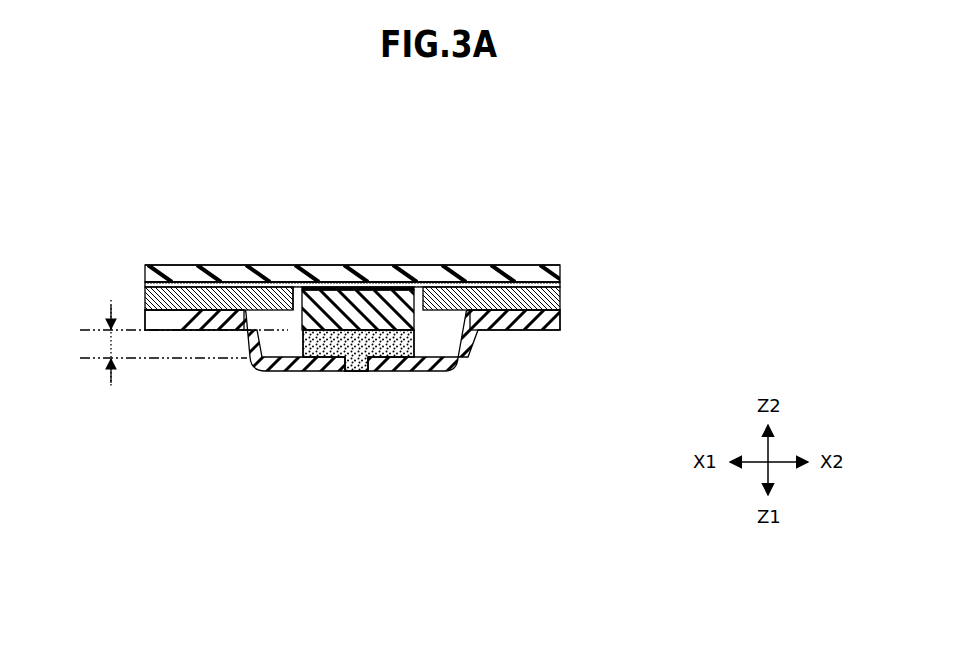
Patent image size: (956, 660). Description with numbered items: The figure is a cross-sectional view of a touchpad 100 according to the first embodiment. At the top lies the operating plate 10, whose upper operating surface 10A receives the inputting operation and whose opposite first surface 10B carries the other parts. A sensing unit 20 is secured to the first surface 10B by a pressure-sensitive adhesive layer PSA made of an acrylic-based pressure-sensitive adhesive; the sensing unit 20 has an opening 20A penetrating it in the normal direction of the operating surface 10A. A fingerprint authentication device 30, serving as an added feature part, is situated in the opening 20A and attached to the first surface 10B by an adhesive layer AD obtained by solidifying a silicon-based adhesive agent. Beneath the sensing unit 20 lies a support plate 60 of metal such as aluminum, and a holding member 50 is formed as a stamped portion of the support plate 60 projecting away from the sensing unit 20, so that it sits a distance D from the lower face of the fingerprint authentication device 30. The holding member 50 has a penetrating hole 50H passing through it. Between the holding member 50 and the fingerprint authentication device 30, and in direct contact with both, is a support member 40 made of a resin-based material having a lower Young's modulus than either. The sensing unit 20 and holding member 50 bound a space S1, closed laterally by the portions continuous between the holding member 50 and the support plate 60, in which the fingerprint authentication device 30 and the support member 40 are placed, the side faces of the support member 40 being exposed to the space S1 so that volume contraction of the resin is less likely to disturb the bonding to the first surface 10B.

The touchpad 100 is at (360, 258).
The operating plate 10 is at (535, 277).
The operating surface 10A is at (409, 263).
The first surface 10B is at (500, 284).
The pressure-sensitive adhesive layer PSA is at (560, 285).
The sensing unit 20 is at (560, 303).
The opening 20A is at (298, 283).
The adhesive layer AD is at (347, 284).
The fingerprint authentication device 30 is at (345, 318).
The support member 40 is at (382, 352).
The holding member 50 is at (435, 367).
The penetrating hole 50H is at (353, 371).
The support plate 60 is at (558, 323).
The space S1 is at (283, 334).
The distance D is at (99, 343).